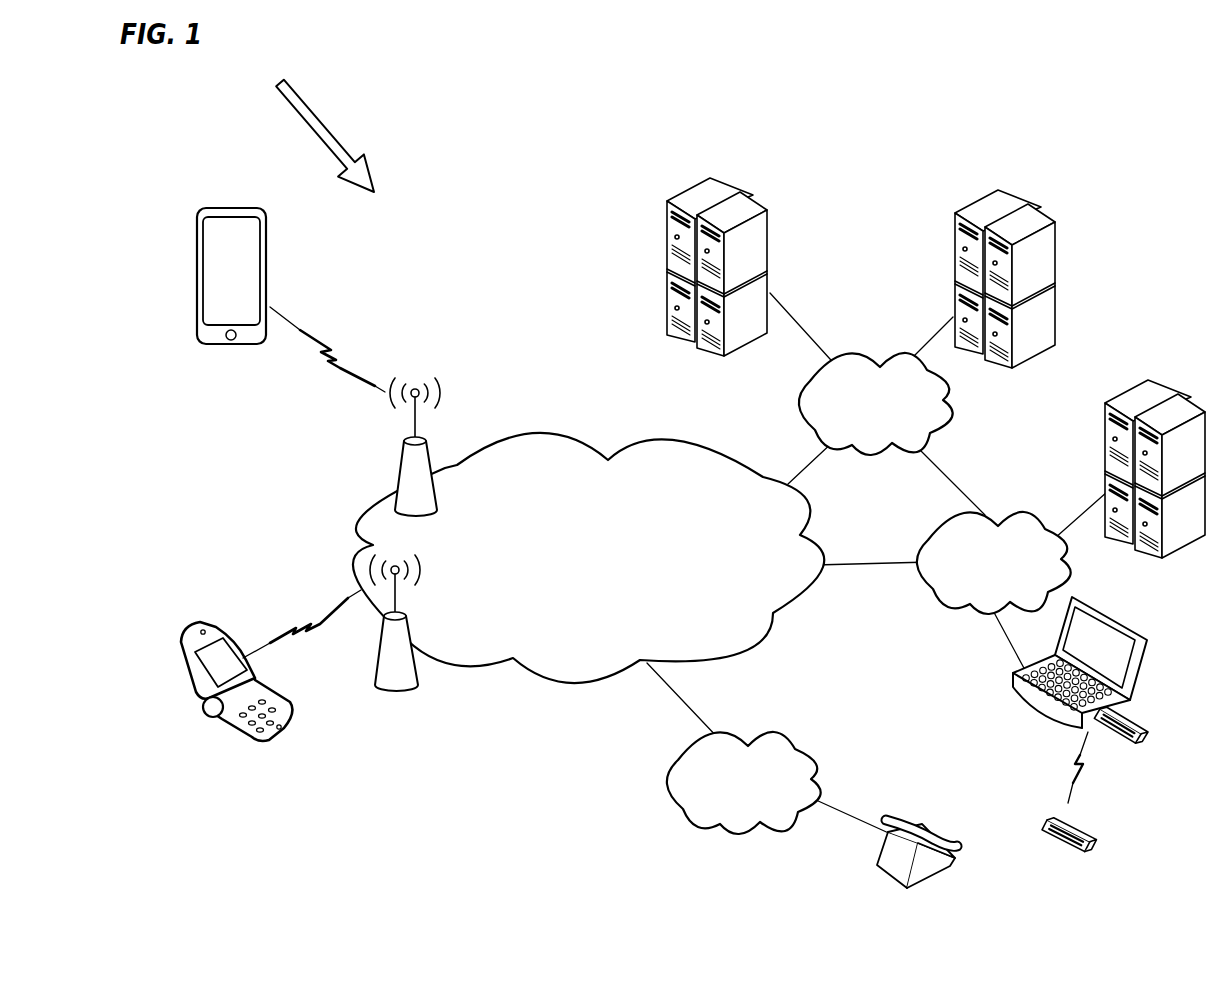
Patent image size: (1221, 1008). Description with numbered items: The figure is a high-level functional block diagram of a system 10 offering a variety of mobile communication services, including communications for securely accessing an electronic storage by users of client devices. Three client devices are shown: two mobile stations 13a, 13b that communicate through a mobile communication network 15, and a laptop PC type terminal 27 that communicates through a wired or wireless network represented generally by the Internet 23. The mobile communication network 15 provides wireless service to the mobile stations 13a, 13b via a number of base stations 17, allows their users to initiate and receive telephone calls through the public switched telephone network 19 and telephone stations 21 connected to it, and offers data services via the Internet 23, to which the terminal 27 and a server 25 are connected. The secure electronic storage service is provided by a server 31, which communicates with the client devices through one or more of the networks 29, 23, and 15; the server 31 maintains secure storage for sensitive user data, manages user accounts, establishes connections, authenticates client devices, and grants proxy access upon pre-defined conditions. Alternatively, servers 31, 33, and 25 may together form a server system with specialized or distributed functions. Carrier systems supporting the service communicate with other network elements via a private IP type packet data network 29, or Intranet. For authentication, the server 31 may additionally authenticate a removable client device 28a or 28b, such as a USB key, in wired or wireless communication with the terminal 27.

The system 10 is at (316, 126).
The mobile station 13a is at (178, 655).
The mobile station 13b is at (197, 253).
The mobile communication network 15 is at (487, 440).
The base station 17 is at (404, 461).
The public switched telephone network (PSTN) 19 is at (817, 765).
The telephone station 21 is at (877, 870).
The Internet 23 is at (935, 606).
The server 25 is at (1107, 470).
The personal computer (PC) terminal 27 is at (1040, 712).
The removable client device 28a is at (1150, 722).
The removable client device 28b is at (1087, 832).
The private IP type packet data network 29 is at (952, 417).
The server 31 is at (772, 222).
The server 33 is at (1055, 283).